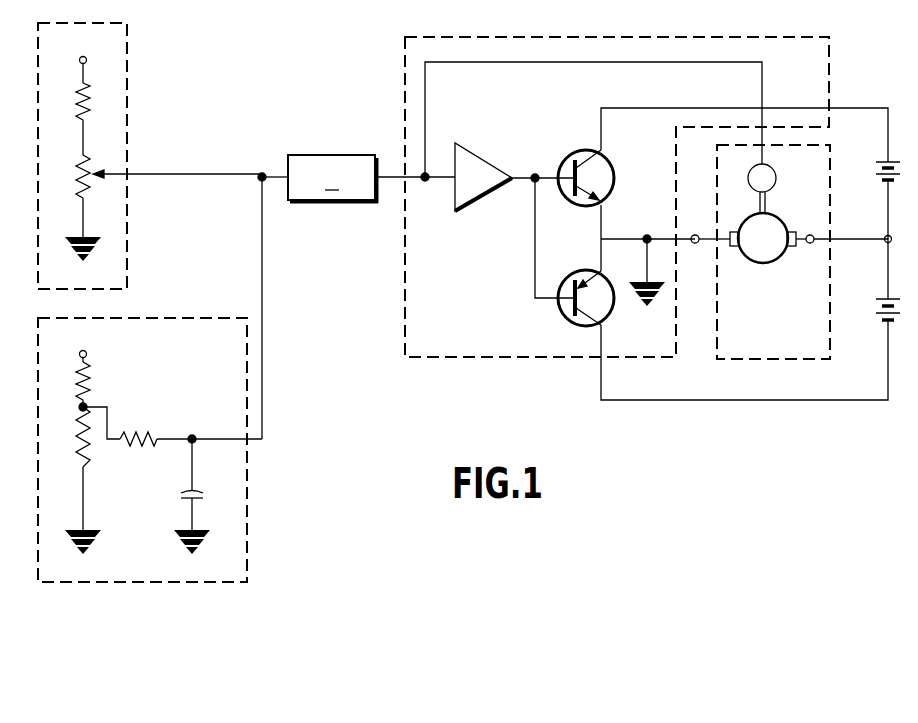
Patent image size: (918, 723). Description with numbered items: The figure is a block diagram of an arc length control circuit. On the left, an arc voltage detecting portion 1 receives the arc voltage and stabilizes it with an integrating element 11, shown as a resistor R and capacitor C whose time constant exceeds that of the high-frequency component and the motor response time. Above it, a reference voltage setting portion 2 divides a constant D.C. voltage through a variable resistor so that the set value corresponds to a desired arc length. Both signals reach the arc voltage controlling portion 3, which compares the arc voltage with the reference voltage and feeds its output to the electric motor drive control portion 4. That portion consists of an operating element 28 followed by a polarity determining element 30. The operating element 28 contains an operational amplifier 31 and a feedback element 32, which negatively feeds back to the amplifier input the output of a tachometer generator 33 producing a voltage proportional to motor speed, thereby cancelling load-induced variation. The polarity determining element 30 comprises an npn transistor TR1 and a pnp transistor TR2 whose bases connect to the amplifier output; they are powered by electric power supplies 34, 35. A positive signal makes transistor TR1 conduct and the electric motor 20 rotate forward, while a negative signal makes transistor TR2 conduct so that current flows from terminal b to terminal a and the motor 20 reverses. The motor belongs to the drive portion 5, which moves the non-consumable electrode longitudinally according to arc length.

The arc voltage detecting portion 1 is at (170, 450).
The reference voltage setting portion 2 is at (113, 109).
The arc voltage controlling portion 3 is at (349, 153).
The electric motor drive control portion 4 is at (462, 57).
The drive portion 5 is at (819, 229).
The integrating element 11 is at (184, 477).
The electric motor 20 is at (749, 262).
The operating element 28 is at (476, 175).
The polarity determining element 30 is at (546, 184).
The operational amplifier 31 is at (480, 198).
The feedback element 32 is at (664, 63).
The tachometer generator 33 is at (782, 186).
The electric power supply 34 is at (886, 178).
The electric power supply 35 is at (886, 318).
The npn transistor TR1 is at (562, 161).
The pnp transistor TR2 is at (562, 322).
The resistor R is at (149, 428).
The capacitor C is at (188, 490).
The terminal a is at (709, 250).
The terminal b is at (807, 251).